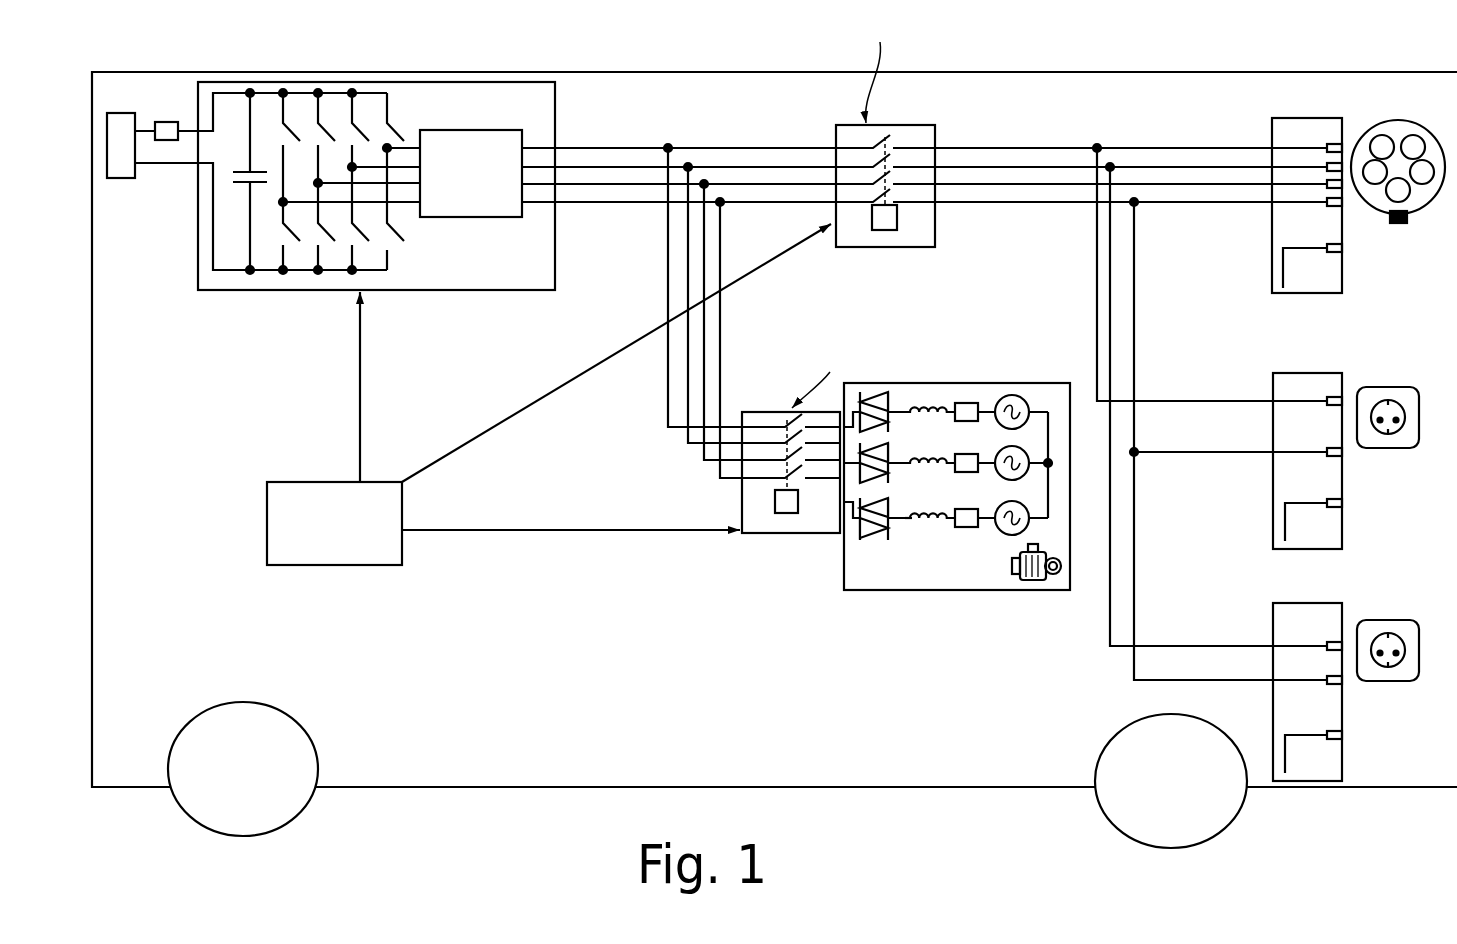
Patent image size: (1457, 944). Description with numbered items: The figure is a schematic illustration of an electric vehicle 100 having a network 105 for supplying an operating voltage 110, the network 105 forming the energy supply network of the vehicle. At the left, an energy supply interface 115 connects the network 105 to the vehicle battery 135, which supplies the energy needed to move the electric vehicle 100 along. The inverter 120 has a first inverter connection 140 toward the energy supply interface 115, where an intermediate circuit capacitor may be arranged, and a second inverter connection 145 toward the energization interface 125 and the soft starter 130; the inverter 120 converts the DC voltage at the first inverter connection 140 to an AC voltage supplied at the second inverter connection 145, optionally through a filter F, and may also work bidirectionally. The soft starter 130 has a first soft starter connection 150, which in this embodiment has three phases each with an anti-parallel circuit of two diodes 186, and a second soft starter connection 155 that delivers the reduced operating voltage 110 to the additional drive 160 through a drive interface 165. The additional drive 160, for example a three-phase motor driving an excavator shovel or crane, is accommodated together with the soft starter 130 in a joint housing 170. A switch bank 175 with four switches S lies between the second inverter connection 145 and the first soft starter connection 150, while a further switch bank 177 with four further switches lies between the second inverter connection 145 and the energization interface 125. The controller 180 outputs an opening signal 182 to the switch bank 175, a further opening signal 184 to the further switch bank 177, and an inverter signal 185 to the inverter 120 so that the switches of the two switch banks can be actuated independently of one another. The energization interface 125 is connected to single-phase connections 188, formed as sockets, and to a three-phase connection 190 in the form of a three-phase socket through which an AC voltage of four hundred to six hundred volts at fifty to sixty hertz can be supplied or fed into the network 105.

The electric vehicle 100 is at (595, 72).
The network 105 is at (216, 521).
The operating voltage 110 is at (905, 524).
The energy supply interface 115 is at (197, 167).
The inverter 120 is at (334, 292).
The energization interface 125 is at (1033, 147).
The soft starter 130 is at (858, 556).
The vehicle battery 135 is at (118, 172).
The first inverter connection 140 is at (140, 167).
The second inverter connection 145 is at (558, 200).
The first soft starter connection 150 is at (843, 552).
The second soft starter connection 155 is at (892, 542).
The additional drive 160 is at (975, 560).
The drive interface 165 is at (908, 547).
The joint housing 170 is at (945, 383).
The switch bank 175 is at (765, 537).
The further switch bank 177 is at (858, 248).
The controller 180 is at (322, 567).
The opening signal 182 is at (562, 533).
The further opening signal 184 is at (531, 400).
The inverter signal 185 is at (358, 418).
The diodes 186 is at (874, 542).
The connection 188 is at (1320, 372).
The three-phase connection 190 is at (1320, 118).